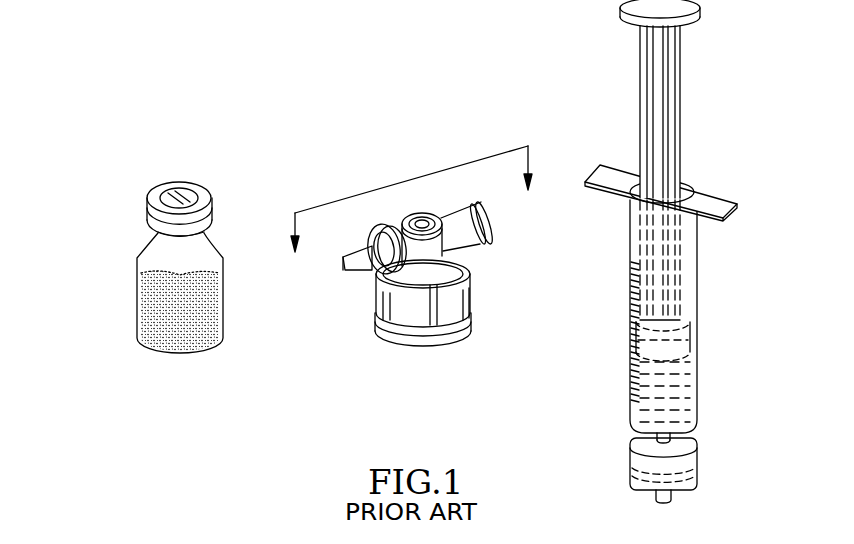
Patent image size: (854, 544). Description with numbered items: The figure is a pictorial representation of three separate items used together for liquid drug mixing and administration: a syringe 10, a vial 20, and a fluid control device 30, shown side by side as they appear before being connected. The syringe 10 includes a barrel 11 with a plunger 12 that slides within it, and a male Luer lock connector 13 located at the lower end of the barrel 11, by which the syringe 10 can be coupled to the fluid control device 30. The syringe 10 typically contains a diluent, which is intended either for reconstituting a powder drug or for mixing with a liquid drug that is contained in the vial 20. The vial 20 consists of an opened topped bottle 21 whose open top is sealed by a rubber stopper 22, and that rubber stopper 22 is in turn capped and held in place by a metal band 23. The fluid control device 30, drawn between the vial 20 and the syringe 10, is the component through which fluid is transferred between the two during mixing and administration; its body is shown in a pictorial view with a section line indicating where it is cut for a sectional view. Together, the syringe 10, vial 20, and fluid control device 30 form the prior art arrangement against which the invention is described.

The syringe 10 is at (694, 251).
The barrel 11 is at (698, 380).
The plunger 12 is at (684, 128).
The male Luer lock connector 13 is at (694, 470).
The vial 20 is at (127, 264).
The opened topped bottle 21 is at (187, 348).
The rubber stopper 22 is at (179, 194).
The metal band 23 is at (163, 183).
The fluid control device 30 is at (437, 158).